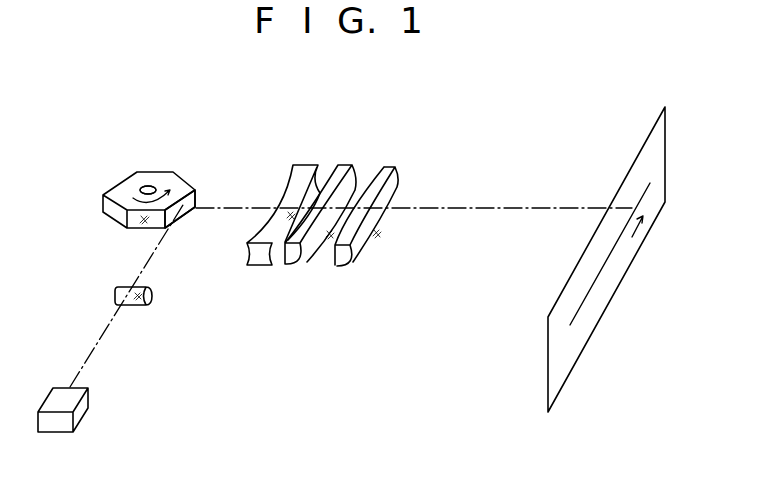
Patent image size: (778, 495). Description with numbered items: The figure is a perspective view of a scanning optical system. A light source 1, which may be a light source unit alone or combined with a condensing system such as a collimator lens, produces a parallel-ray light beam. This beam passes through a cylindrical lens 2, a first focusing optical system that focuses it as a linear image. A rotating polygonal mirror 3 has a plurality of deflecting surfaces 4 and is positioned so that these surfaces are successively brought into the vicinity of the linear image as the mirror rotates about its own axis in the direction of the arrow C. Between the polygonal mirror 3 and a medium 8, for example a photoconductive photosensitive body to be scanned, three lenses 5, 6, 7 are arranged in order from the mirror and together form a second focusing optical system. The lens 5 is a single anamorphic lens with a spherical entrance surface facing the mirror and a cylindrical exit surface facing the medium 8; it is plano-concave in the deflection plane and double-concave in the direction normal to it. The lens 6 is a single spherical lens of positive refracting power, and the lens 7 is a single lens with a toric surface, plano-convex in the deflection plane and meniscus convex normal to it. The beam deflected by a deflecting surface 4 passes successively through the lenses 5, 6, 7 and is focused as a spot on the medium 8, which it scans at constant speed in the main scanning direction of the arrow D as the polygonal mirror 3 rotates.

The light source 1 is at (75, 393).
The cylindrical lens 2 is at (152, 292).
The rotating polygonal mirror 3 is at (128, 184).
The deflecting surfaces 4 is at (191, 197).
The arrow C is at (136, 199).
The anamorphic lens 5 is at (304, 173).
The spherical lens 6 is at (343, 168).
The toric lens 7 is at (387, 172).
The medium 8 is at (632, 177).
The arrow D is at (627, 252).